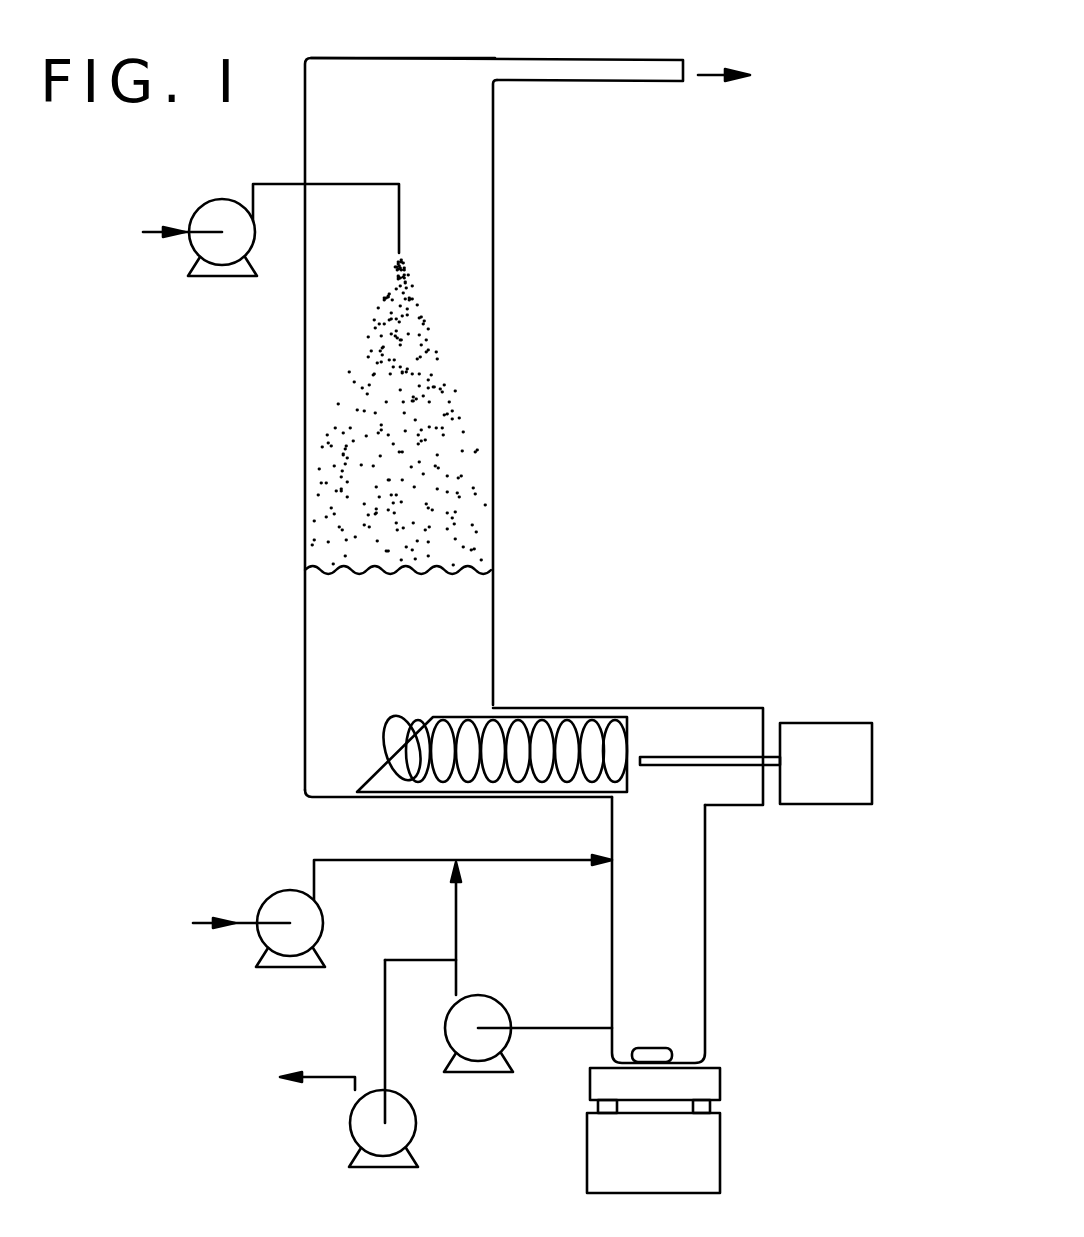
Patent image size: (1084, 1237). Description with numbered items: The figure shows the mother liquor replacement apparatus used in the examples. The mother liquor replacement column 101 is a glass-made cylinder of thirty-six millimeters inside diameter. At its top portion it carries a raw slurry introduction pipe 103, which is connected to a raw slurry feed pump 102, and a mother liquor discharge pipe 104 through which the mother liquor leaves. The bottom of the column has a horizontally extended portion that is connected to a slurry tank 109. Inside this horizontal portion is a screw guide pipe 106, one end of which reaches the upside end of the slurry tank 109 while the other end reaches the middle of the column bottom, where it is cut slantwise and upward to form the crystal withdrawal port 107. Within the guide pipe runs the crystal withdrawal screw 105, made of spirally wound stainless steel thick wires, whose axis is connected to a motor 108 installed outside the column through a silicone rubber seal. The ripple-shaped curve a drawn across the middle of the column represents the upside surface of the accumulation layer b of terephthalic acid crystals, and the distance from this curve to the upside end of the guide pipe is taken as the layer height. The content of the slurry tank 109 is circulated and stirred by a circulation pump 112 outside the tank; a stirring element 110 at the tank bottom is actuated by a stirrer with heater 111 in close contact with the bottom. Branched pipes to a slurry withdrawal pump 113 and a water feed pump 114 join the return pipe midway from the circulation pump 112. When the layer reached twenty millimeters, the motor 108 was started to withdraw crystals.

The mother liquor replacement column 101 is at (493, 333).
The raw slurry feed pump 102 is at (193, 255).
The raw slurry introduction pipe 103 is at (402, 222).
The mother liquor discharge pipe 104 is at (628, 62).
The crystal withdrawal screw 105 is at (495, 705).
The screw guide pipe 106 is at (600, 715).
The crystal withdrawal port 107 is at (388, 752).
The motor 108 is at (832, 740).
The slurry tank 109 is at (705, 913).
The stirring element 110 is at (660, 1048).
The stirrer with heater 111 is at (695, 1165).
The circulation pump 112 is at (493, 995).
The slurry withdrawal pump 113 is at (390, 1168).
The water feed pump 114 is at (258, 942).
The upside surface of accumulation layer a is at (440, 565).
The accumulation layer of terephthalic acid crystals b is at (332, 618).